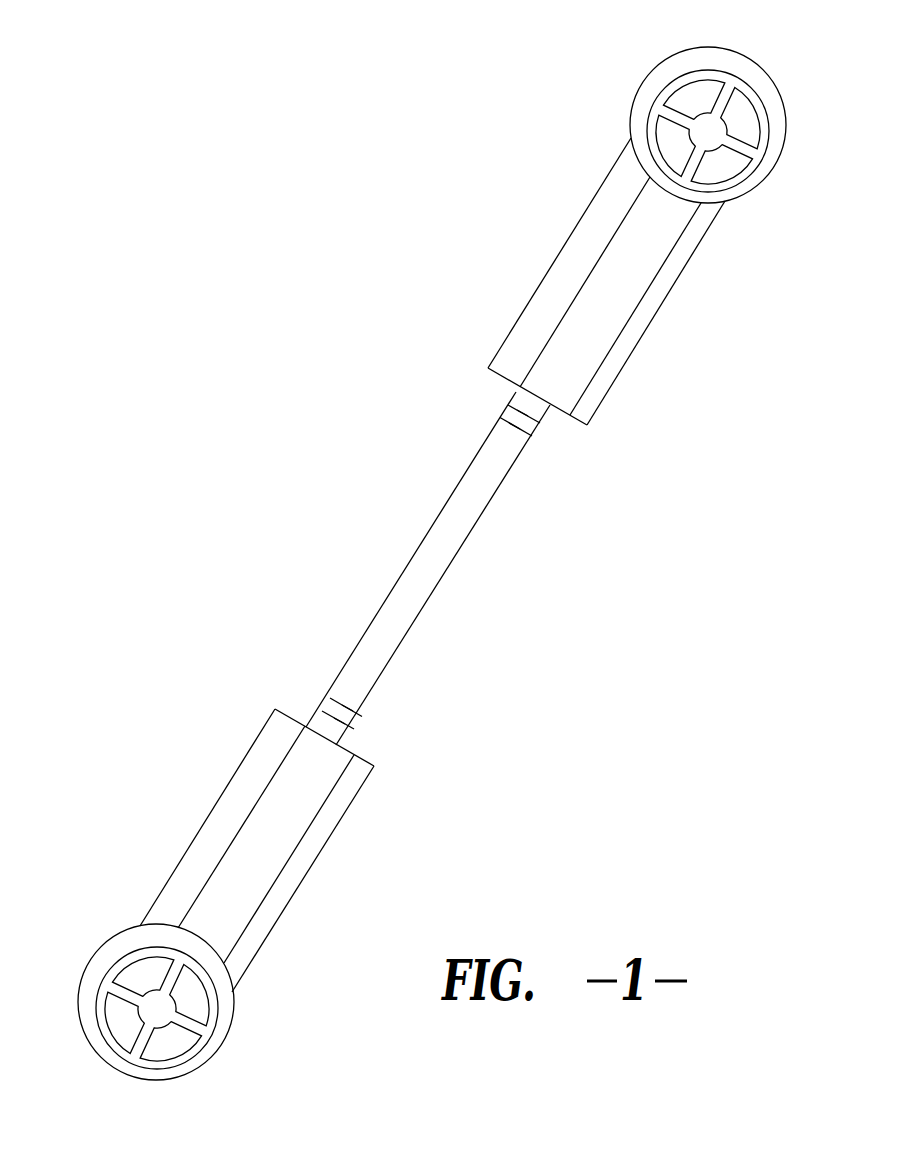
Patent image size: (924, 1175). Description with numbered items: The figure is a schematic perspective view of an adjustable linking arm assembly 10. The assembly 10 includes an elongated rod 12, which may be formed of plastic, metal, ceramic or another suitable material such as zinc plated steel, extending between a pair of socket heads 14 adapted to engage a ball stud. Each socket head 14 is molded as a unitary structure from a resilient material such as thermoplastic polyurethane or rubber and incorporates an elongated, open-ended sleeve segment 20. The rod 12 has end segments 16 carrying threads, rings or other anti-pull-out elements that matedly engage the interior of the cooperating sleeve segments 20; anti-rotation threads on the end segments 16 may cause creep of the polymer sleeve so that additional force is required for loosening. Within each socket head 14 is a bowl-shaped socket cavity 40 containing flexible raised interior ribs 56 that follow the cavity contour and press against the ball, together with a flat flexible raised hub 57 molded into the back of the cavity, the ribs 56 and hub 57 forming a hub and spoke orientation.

The linking arm assembly 10 is at (448, 200).
The rod 12 is at (450, 565).
The socket head 14 is at (664, 59).
The end segment 16 is at (534, 434).
The sleeve segment 20 is at (650, 323).
The socket cavity 40 is at (420, 593).
The interior rib 56 is at (130, 1002).
The raised hub 57 is at (163, 1030).